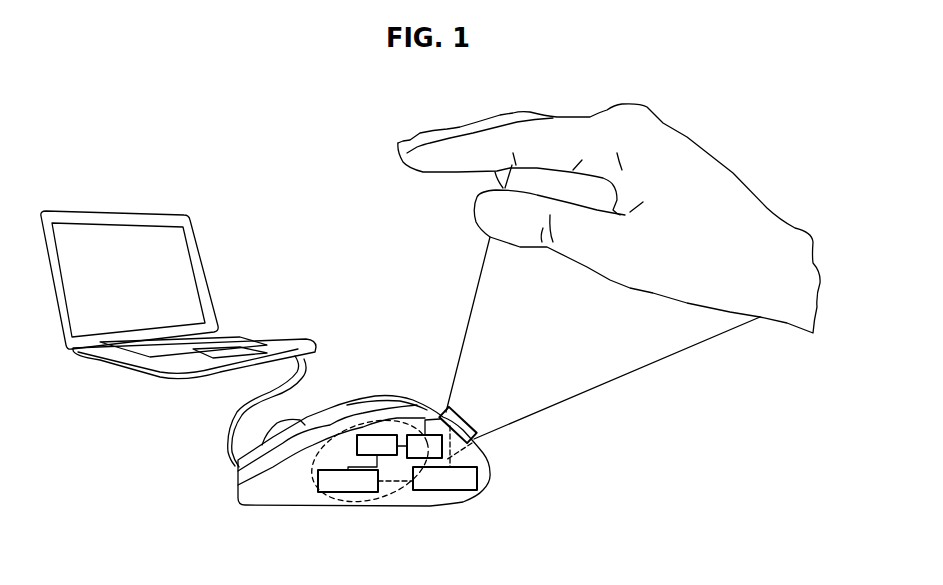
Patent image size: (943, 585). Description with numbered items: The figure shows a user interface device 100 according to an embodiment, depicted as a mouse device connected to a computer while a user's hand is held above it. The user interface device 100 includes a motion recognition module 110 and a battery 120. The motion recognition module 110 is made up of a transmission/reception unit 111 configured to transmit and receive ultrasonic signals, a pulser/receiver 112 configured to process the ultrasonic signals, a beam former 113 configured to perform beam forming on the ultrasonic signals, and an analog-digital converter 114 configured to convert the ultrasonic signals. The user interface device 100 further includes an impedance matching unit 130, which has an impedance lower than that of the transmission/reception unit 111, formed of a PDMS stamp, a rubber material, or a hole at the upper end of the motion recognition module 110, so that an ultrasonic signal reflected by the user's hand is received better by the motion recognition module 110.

The user interface device 100 is at (216, 470).
The motion recognition module 110 is at (368, 503).
The transmission/reception unit 111 is at (478, 441).
The pulser/receiver 112 is at (411, 458).
The beam former 113 is at (384, 435).
The analog-digital converter 114 is at (330, 493).
The battery 120 is at (450, 491).
The impedance matching unit 130 is at (447, 407).